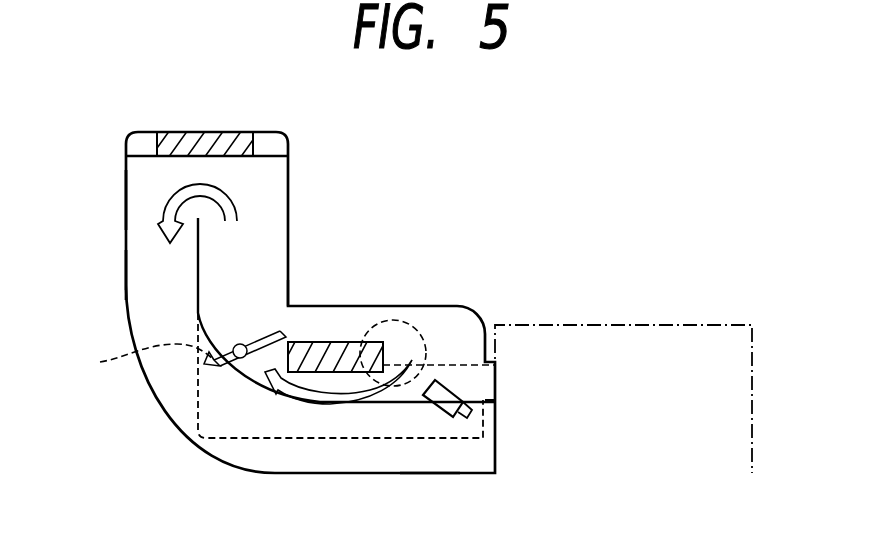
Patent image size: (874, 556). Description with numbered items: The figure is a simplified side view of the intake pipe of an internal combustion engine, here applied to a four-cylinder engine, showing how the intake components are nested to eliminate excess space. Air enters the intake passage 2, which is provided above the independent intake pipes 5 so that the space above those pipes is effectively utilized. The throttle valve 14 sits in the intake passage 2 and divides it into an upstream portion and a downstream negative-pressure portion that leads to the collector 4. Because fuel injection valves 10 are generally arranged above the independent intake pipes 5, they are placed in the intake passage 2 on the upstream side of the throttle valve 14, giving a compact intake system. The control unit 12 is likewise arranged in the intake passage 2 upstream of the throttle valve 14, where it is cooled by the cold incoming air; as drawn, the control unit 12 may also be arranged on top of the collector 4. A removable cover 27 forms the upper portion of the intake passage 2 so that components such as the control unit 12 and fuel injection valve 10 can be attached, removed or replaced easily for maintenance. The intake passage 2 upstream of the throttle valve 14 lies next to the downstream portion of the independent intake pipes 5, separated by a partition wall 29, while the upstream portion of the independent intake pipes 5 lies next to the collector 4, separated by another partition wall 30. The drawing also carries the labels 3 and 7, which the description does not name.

The intake passage 2 is at (452, 333).
The inner chamber 3 is at (232, 382).
The collector 4 is at (108, 197).
The independent intake pipes 5 is at (147, 282).
The adjacent body 7 is at (651, 325).
The fuel injection valve 10 is at (450, 394).
The control unit 12 is at (248, 134).
The throttle valve 14 is at (178, 354).
The removable cover 27 is at (483, 316).
The partition wall 29 is at (318, 404).
The partition wall 30 is at (287, 320).